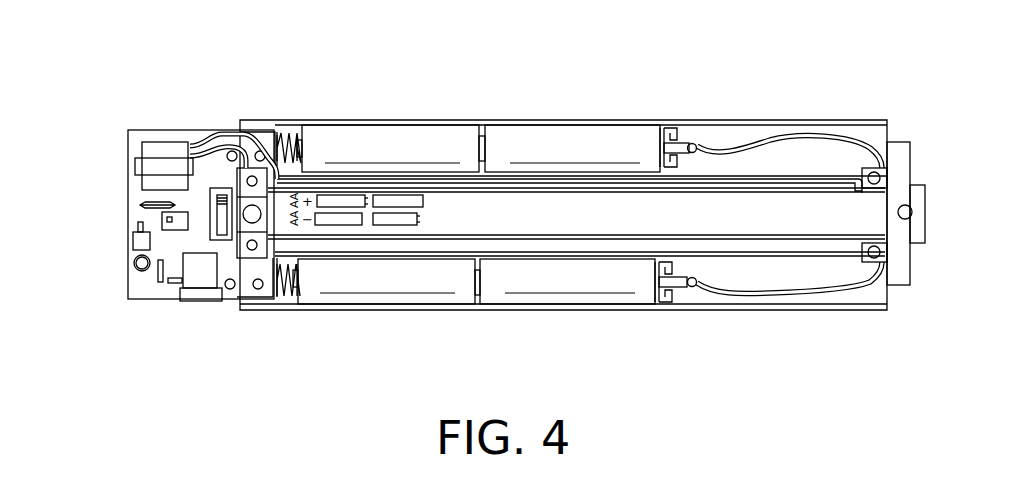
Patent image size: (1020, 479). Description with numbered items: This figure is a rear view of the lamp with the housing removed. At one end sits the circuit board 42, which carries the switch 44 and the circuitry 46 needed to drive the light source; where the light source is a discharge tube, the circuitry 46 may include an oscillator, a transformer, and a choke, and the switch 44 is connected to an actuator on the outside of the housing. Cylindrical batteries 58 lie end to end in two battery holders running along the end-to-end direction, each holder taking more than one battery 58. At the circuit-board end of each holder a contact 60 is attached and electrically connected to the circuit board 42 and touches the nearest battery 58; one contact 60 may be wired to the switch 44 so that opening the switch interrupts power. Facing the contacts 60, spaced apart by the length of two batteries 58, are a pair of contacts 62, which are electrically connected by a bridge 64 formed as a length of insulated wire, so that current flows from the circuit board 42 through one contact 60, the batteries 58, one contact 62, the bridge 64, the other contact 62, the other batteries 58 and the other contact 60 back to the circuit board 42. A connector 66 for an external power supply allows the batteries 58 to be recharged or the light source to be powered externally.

The circuit board 42 is at (152, 143).
The switch 44 is at (223, 240).
The circuitry 46 is at (150, 167).
The batteries 58 is at (572, 286).
The contact 60 is at (264, 132).
The contact 62 is at (675, 127).
The bridge 64 is at (866, 312).
The connector 66 is at (194, 300).